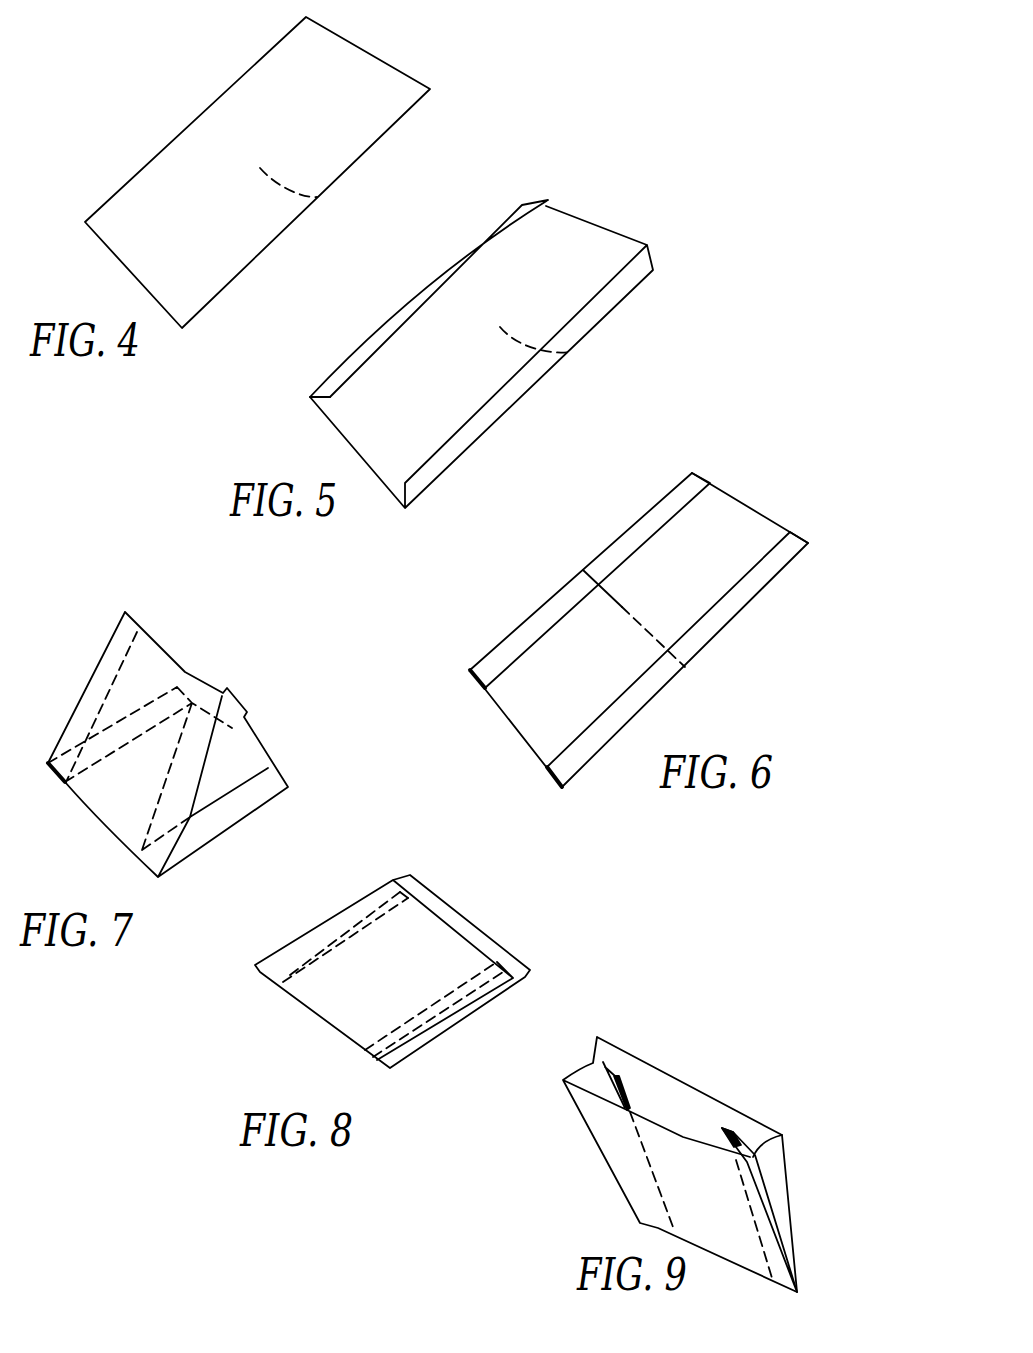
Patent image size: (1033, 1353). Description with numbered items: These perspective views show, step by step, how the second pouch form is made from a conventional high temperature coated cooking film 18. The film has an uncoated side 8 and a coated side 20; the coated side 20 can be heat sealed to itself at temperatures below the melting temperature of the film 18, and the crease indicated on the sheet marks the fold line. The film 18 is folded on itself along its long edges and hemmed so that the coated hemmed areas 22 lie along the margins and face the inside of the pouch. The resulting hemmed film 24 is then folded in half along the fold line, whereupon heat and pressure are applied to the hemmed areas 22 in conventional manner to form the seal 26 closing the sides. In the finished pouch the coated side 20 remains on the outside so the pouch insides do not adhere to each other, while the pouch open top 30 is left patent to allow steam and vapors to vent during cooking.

In FIG. 4, the uncoated side 8 is at (285, 102).
In FIG. 5, the uncoated side 8 is at (535, 288).
In FIG. 4, the high temperature coated cooking film 18 is at (125, 119).
In FIG. 4, the coated side 20 is at (317, 197).
In FIG. 5, the coated side 20 is at (570, 352).
In FIG. 5, the coated hemmed areas 22 is at (392, 330).
In FIG. 6, the coated hemmed areas 22 is at (667, 508).
In FIG. 7, the coated hemmed areas 22 is at (237, 808).
In FIG. 6, the hemmed film 24 is at (750, 512).
In FIG. 9, the seal 26 is at (760, 1175).
In FIG. 9, the pouch open top 30 is at (675, 1105).